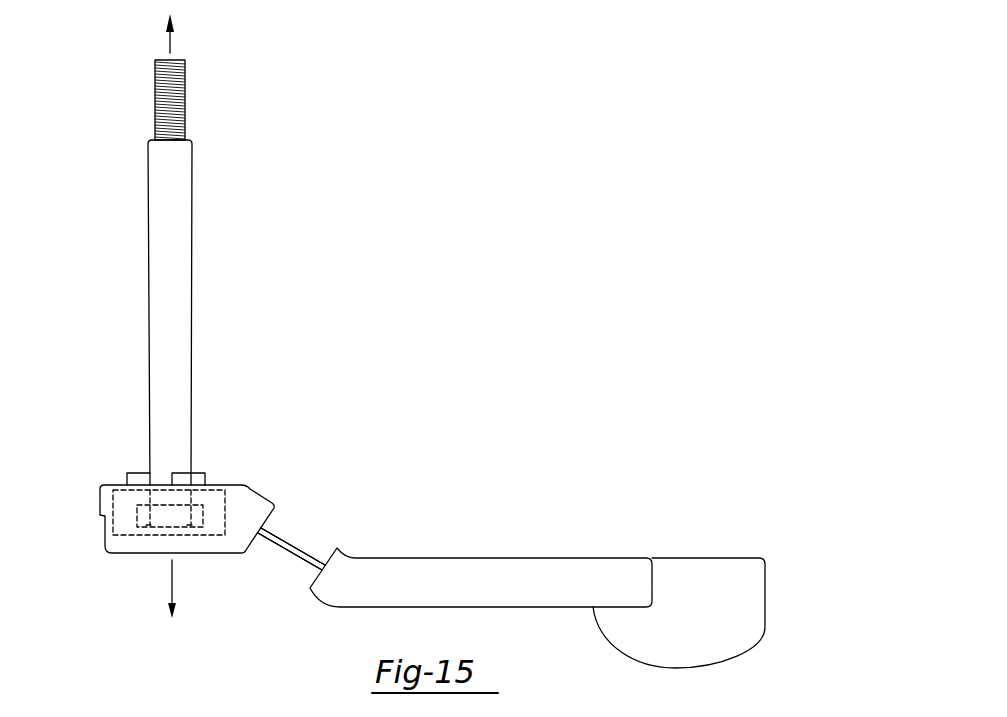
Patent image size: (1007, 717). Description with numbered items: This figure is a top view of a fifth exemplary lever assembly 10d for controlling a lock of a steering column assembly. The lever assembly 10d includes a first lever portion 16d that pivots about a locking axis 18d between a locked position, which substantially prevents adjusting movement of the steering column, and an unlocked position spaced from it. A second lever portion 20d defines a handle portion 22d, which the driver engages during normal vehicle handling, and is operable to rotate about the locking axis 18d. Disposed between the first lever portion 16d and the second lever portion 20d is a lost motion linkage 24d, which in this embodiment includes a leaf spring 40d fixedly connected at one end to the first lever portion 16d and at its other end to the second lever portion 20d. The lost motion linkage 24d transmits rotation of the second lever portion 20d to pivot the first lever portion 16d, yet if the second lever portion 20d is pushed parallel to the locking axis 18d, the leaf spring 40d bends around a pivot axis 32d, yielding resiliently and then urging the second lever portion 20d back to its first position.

The lever assembly 10d is at (470, 300).
The first lever portion 16d is at (134, 585).
The locking axis 18d is at (168, 43).
The second lever portion 20d is at (532, 548).
The handle portion 22d is at (725, 627).
The lost motion linkage 24d is at (352, 455).
The pivot axis 32d is at (292, 556).
The leaf spring 40d is at (298, 543).